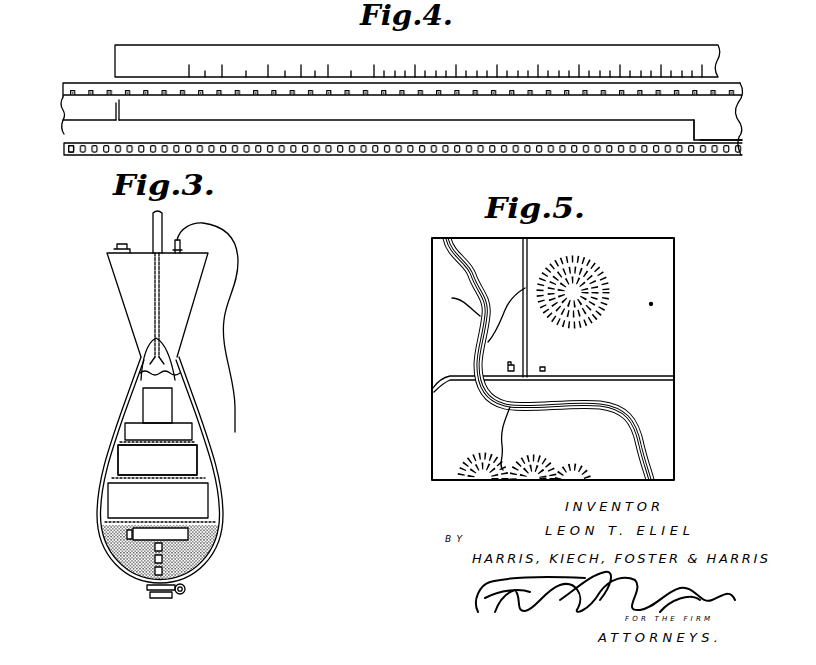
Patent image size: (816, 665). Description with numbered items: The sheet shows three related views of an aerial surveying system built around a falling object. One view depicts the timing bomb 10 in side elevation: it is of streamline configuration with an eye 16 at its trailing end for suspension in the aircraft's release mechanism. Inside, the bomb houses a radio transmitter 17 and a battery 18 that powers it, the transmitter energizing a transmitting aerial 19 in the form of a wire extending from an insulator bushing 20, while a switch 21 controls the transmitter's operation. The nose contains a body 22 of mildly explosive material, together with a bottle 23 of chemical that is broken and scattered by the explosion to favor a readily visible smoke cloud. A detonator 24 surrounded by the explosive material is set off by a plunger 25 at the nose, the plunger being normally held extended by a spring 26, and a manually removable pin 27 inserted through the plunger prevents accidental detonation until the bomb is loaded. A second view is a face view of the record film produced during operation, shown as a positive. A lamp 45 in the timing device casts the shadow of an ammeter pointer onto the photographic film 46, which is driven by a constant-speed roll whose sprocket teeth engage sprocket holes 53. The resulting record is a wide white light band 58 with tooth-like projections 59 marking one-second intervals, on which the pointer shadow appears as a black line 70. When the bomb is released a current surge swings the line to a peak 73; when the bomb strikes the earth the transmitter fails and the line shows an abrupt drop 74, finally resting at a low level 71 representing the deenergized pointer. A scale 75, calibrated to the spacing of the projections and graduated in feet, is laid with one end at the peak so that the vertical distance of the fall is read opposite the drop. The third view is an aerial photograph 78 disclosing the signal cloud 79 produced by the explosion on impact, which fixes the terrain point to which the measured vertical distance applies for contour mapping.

In FIG. 3, the timing bomb 10 is at (109, 377).
In FIG. 3, the eye 16 is at (152, 225).
In FIG. 3, the radio transmitter 17 is at (128, 453).
In FIG. 3, the battery 18 is at (197, 500).
In FIG. 3, the transmitting aerial 19 is at (228, 311).
In FIG. 3, the insulator bushing 20 is at (181, 246).
In FIG. 3, the switch 21 is at (110, 251).
In FIG. 4, the body of mildly explosive material 22 is at (77, 121).
In FIG. 3, the body of mildly explosive material 22 is at (98, 543).
In FIG. 3, the bottle of chemical 23 is at (187, 534).
In FIG. 3, the detonator 24 is at (157, 548).
In FIG. 3, the plunger 25 is at (155, 593).
In FIG. 3, the spring 26 is at (165, 598).
In FIG. 3, the manually removable pin 27 is at (186, 589).
In FIG. 4, the lamp 45 is at (301, 5).
In FIG. 4, the photographic film 46 is at (433, 156).
In FIG. 4, the sprocket holes 53 is at (91, 150).
In FIG. 4, the light band 58 is at (323, 133).
In FIG. 4, the tooth-like projections 59 is at (405, 93).
In FIG. 4, the black line 70 is at (256, 133).
In FIG. 4, the low level 71 is at (715, 153).
In FIG. 4, the peak 73 is at (117, 100).
In FIG. 4, the abrupt drop 74 is at (695, 135).
In FIG. 4, the scale 75 is at (547, 38).
In FIG. 5, the photograph 78 is at (432, 297).
In FIG. 5, the signal cloud 79 is at (653, 304).